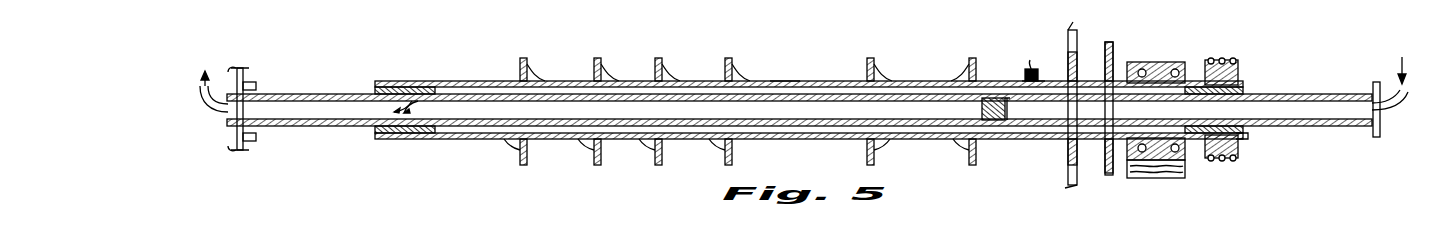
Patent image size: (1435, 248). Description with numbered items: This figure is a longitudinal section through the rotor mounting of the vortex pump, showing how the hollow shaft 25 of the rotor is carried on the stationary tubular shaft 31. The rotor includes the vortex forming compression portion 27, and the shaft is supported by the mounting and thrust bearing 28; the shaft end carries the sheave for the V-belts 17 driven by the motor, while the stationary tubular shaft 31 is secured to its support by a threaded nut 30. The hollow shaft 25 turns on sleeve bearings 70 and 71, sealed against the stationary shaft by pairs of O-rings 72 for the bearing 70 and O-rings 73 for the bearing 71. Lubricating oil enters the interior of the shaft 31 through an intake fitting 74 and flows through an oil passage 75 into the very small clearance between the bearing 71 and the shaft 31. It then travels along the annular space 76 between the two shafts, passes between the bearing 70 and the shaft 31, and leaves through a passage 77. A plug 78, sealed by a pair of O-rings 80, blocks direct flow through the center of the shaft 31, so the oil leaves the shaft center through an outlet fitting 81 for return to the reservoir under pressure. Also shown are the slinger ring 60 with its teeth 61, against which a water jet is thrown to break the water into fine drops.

The V-belts 17 is at (1222, 60).
The hollow shaft 25 is at (440, 81).
The vortex forming compression portion 27 is at (598, 58).
The mounting and thrust bearing 28 is at (972, 58).
The threaded nut 30 is at (244, 70).
The stationary tubular shaft 31 is at (332, 94).
The slinger ring 60 is at (1027, 70).
The teeth 61 is at (1031, 62).
The sleeve bearing 70 is at (375, 83).
The sleeve bearing 71 is at (1243, 134).
The O-rings 72 is at (392, 114).
The O-rings 73 is at (1222, 96).
The intake fitting 74 is at (1396, 125).
The oil passage 75 is at (1212, 95).
The annular space 76 is at (785, 81).
The passage 77 is at (408, 102).
The plug 78 is at (1010, 108).
The O-rings 80 is at (982, 104).
The outlet fitting 81 is at (218, 118).